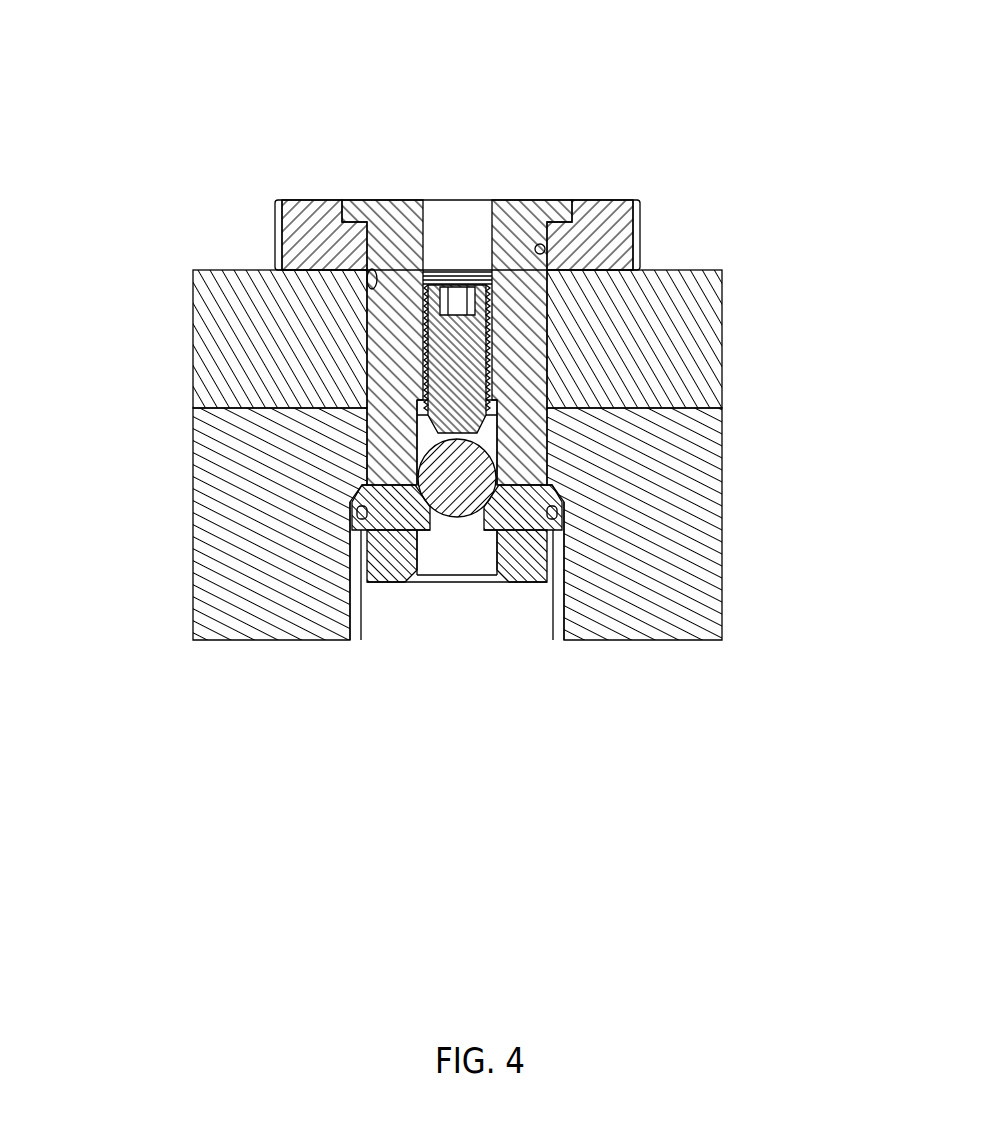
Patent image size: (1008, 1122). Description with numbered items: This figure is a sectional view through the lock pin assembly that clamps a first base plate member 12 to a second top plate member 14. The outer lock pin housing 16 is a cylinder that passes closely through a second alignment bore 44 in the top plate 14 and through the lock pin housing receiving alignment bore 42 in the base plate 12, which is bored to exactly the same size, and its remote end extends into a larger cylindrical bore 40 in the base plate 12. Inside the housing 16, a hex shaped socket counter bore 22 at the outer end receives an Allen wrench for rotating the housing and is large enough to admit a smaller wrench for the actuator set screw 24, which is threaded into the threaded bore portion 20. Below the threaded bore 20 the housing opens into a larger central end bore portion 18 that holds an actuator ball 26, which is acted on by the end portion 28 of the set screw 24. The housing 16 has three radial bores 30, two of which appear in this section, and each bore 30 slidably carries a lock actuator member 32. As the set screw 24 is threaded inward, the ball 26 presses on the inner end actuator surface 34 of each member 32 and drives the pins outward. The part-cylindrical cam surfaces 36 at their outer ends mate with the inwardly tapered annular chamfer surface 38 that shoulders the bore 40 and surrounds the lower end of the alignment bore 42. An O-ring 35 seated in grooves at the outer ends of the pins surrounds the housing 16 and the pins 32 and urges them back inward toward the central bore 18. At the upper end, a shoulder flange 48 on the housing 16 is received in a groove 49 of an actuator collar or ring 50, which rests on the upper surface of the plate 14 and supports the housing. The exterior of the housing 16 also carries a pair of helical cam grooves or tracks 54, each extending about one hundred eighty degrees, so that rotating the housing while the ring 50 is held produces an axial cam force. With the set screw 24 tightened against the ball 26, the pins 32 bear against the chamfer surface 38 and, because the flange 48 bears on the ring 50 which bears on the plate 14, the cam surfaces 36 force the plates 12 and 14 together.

The first base plate member 12 is at (258, 497).
The second top plate member 14 is at (250, 294).
The outer lock pin housing 16 is at (513, 528).
The central end bore portion 18 is at (463, 553).
The threaded bore portion 20 is at (413, 377).
The hex shaped socket counter bore 22 is at (427, 230).
The actuator set screw 24 is at (460, 390).
The actuator ball 26 is at (497, 462).
The end portion of the set screw 28 is at (395, 457).
The radial bores 30 is at (362, 487).
The lock actuator members 32 is at (407, 533).
The inner end actuator surface 34 is at (439, 518).
The O-ring 35 is at (356, 512).
The cam surfaces 36 is at (545, 487).
The inwardly tapered annular chamfer surface 38 is at (567, 507).
The larger cylindrical bore 40 is at (490, 605).
The lock pin housing receiving alignment bore 42 is at (550, 432).
The second alignment bore 44 is at (515, 198).
The shoulder flange 48 is at (362, 220).
The groove 49 is at (558, 212).
The actuator collar or ring 50 is at (315, 227).
The helical cam grooves or tracks 54 is at (380, 282).